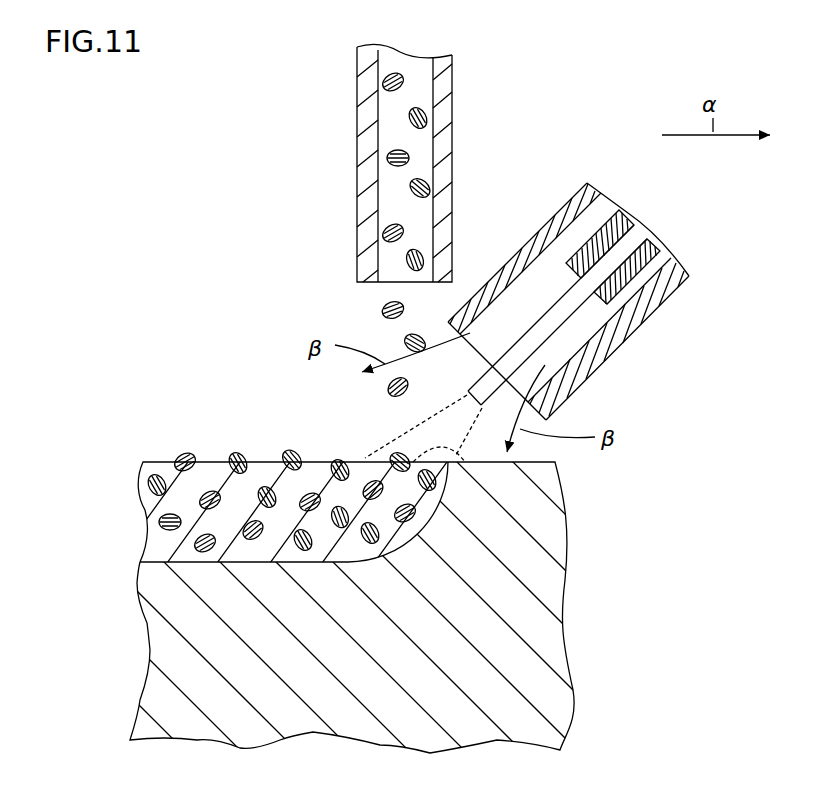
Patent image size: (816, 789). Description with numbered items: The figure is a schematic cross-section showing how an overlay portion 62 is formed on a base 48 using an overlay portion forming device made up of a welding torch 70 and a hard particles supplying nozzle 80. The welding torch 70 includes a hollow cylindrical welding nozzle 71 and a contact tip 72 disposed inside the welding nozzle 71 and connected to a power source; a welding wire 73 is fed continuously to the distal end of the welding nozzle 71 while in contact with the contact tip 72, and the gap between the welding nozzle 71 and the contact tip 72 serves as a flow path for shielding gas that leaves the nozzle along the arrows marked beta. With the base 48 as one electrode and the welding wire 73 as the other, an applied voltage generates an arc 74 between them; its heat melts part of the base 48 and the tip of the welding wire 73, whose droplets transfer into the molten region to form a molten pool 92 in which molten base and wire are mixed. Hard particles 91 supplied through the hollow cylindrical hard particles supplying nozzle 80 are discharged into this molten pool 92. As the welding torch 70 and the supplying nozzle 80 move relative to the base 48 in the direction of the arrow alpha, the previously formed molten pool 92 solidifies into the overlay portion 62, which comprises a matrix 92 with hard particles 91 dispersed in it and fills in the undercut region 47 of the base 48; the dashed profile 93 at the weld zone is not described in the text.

The undercut region 47 is at (165, 560).
The base 48 is at (577, 580).
The overlay portion 62 is at (268, 467).
The welding torch 70 is at (604, 286).
The welding nozzle 71 is at (523, 250).
The contact tip 72 is at (589, 237).
The welding wire 73 is at (565, 307).
The arc 74 is at (425, 437).
The hard particles supplying nozzle 80 is at (445, 165).
The hard particles 91 is at (385, 84).
The molten pool 92 is at (262, 472).
The molten pool 93 is at (490, 466).